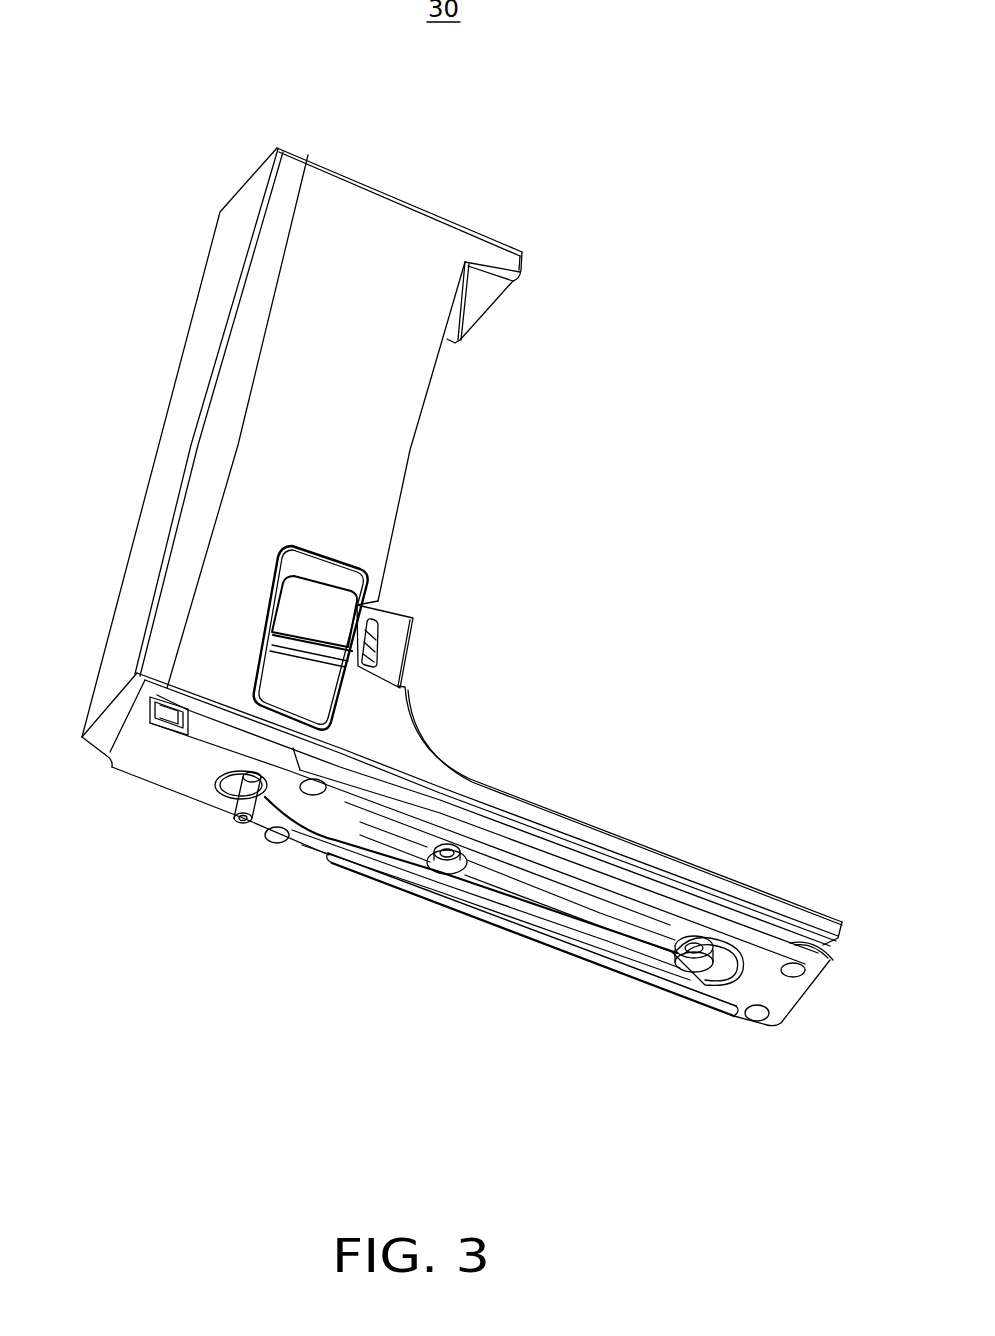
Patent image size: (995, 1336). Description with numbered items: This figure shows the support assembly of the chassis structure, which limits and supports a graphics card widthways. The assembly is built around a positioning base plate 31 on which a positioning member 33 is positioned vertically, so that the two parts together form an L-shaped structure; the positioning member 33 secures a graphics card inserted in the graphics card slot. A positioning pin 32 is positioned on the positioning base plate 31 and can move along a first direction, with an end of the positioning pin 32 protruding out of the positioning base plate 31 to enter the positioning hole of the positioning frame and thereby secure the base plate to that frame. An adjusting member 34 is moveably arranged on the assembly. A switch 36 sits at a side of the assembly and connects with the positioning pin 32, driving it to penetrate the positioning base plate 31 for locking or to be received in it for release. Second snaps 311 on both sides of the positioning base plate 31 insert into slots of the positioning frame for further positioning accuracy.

The positioning base plate 31 is at (397, 730).
The second snap 311 is at (405, 890).
The positioning pin 32 is at (242, 823).
The positioning member 33 is at (288, 287).
The adjusting member 34 is at (413, 617).
The switch 36 is at (297, 605).